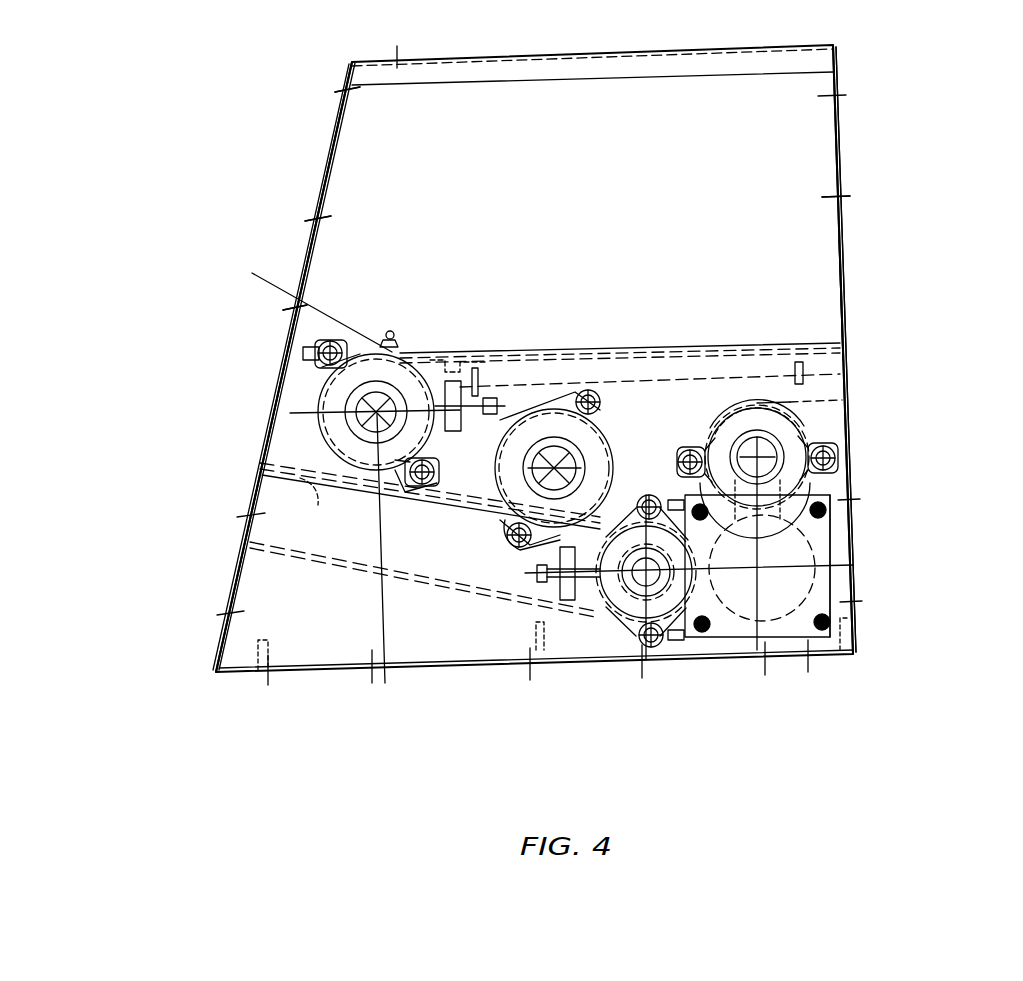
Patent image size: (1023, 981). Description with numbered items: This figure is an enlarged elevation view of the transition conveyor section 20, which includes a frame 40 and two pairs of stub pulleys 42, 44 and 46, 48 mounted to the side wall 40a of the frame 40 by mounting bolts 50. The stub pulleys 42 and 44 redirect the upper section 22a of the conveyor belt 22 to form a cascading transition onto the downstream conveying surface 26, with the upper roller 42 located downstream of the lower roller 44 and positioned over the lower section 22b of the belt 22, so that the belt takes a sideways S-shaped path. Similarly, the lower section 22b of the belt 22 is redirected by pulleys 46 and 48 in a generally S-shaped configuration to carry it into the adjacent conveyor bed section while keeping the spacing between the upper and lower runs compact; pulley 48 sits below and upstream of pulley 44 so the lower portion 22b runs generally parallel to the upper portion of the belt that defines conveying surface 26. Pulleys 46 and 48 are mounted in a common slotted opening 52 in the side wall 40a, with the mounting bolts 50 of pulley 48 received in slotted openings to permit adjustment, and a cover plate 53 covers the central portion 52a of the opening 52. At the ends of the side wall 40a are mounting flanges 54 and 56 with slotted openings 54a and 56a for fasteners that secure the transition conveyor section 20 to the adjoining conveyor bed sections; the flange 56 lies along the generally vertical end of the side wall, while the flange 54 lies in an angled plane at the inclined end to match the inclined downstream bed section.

The transition conveyor section 20 is at (862, 97).
The conveyor belt 22 is at (556, 345).
The upper section of conveyor belt 22a is at (445, 352).
The lower section of conveyor belt 22b is at (375, 626).
The conveying surface 26 is at (537, 542).
The frame 40 is at (780, 175).
The side wall 40a is at (805, 293).
The stub pulley 42 is at (300, 405).
The stub pulley 44 is at (565, 405).
The stub pulley 46 is at (793, 452).
The stub pulley 48 is at (617, 585).
The mounting bolts 50 is at (336, 343).
The slotted opening 52 is at (795, 565).
The central portion of opening 52a is at (743, 597).
The cover plate 53 is at (822, 590).
The mounting flange 54 is at (340, 136).
The slotted openings 54a is at (350, 92).
The mounting flange 56 is at (840, 255).
The slotted openings 56a is at (838, 195).